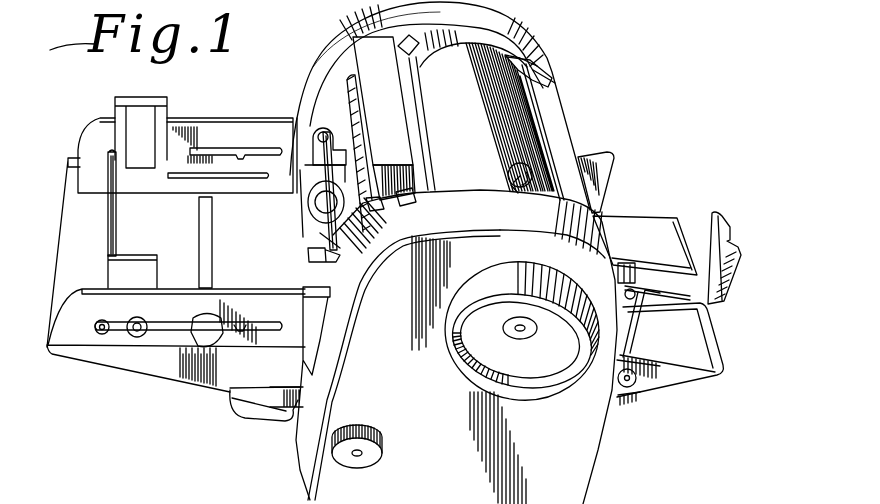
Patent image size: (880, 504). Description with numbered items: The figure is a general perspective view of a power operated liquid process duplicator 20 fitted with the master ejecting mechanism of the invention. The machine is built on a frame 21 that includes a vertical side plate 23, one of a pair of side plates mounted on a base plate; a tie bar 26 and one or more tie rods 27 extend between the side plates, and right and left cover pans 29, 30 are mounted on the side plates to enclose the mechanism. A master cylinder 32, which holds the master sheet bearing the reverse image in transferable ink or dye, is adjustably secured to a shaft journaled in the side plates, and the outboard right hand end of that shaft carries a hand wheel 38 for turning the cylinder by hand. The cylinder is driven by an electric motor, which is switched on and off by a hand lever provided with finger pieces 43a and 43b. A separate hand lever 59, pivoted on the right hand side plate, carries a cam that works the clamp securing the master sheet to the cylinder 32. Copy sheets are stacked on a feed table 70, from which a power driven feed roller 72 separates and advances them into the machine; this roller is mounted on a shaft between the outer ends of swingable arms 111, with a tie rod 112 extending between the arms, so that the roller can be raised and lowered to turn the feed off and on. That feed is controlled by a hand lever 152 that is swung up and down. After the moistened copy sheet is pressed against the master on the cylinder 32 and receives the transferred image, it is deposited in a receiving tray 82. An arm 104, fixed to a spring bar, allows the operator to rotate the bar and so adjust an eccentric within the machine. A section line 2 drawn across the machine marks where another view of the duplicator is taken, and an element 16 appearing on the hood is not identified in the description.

The section line 2- 2 is at (210, 242).
The arcuate track 16 is at (362, 37).
The liquid process duplicator 20 is at (552, 64).
The frame 21 is at (594, 475).
The side plate 23 is at (333, 70).
The tie bar 26 is at (565, 108).
The tie rod 27 is at (338, 103).
The right cover pan 29 is at (330, 483).
The left cover pan 30 is at (330, 42).
The master cylinder 32 is at (502, 58).
The hand wheel 38 is at (466, 384).
The finger piece 43a is at (377, 208).
The finger piece 43b is at (414, 200).
The hand lever 59 is at (523, 188).
The feed table 70 is at (78, 205).
The feed roller 72 is at (306, 203).
The receiving tray 82 is at (702, 345).
The arm 104 is at (640, 383).
The arms 111 is at (326, 115).
The tie rod 112 is at (328, 221).
The hand lever 152 is at (308, 253).